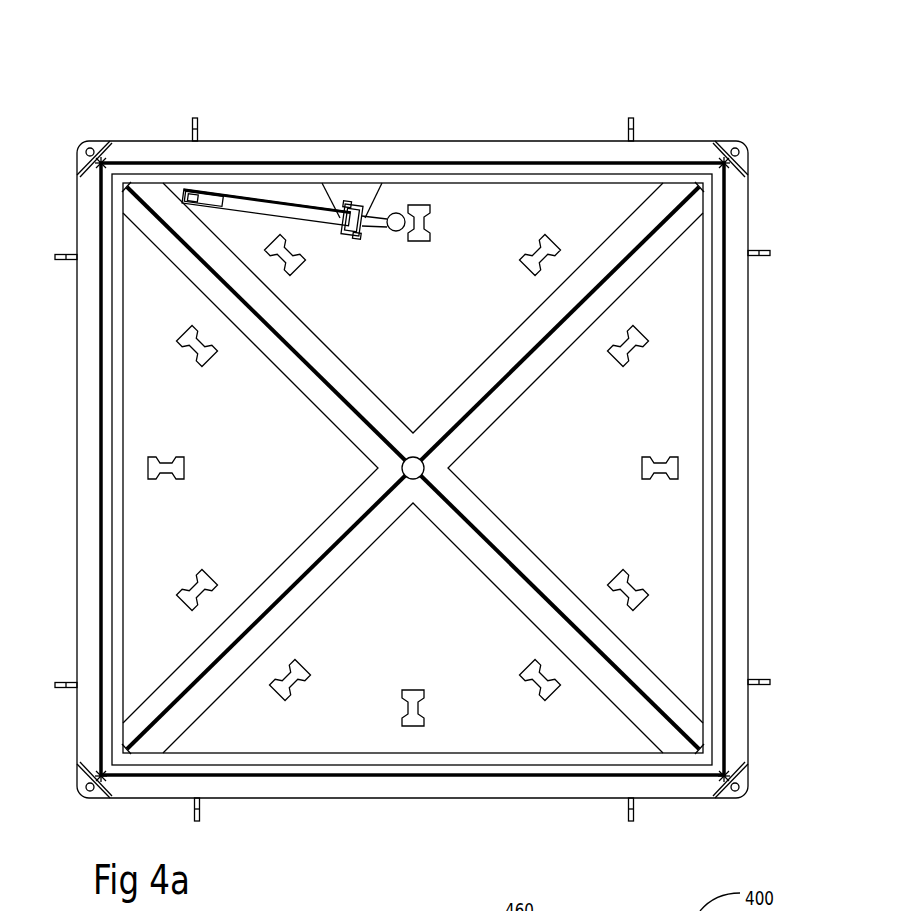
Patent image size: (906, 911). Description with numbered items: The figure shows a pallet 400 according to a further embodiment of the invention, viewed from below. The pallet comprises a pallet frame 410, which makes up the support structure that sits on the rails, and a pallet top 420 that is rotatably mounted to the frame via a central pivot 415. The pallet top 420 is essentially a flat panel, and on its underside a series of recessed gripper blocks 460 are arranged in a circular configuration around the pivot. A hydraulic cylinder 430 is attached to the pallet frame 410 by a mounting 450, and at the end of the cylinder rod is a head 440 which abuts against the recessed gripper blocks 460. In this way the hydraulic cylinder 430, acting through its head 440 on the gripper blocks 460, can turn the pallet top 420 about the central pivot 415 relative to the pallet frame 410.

The pallet 400 is at (632, 62).
The pallet frame 410 is at (623, 690).
The central pivot 415 is at (413, 462).
The pallet top 420 is at (350, 714).
The hydraulic cylinder 430 is at (268, 207).
The head 440 is at (399, 222).
The mounting 450 is at (350, 234).
The gripper blocks 460 is at (540, 250).